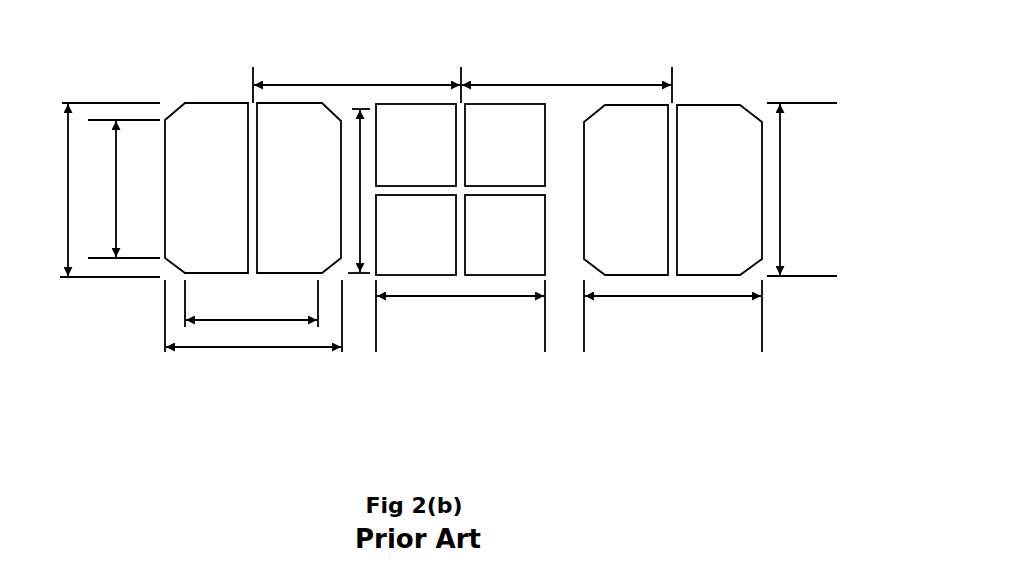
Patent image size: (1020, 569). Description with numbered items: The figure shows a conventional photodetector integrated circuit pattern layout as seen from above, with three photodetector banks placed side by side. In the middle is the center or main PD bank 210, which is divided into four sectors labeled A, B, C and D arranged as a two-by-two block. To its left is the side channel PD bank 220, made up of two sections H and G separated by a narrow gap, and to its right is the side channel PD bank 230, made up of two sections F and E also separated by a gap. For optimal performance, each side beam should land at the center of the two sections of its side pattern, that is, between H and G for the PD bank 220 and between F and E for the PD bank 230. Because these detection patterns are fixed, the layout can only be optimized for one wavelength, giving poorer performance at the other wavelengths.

The center PD bank 210 is at (450, 366).
The side channel PD bank 220 is at (205, 366).
The side channel PD bank 230 is at (655, 366).